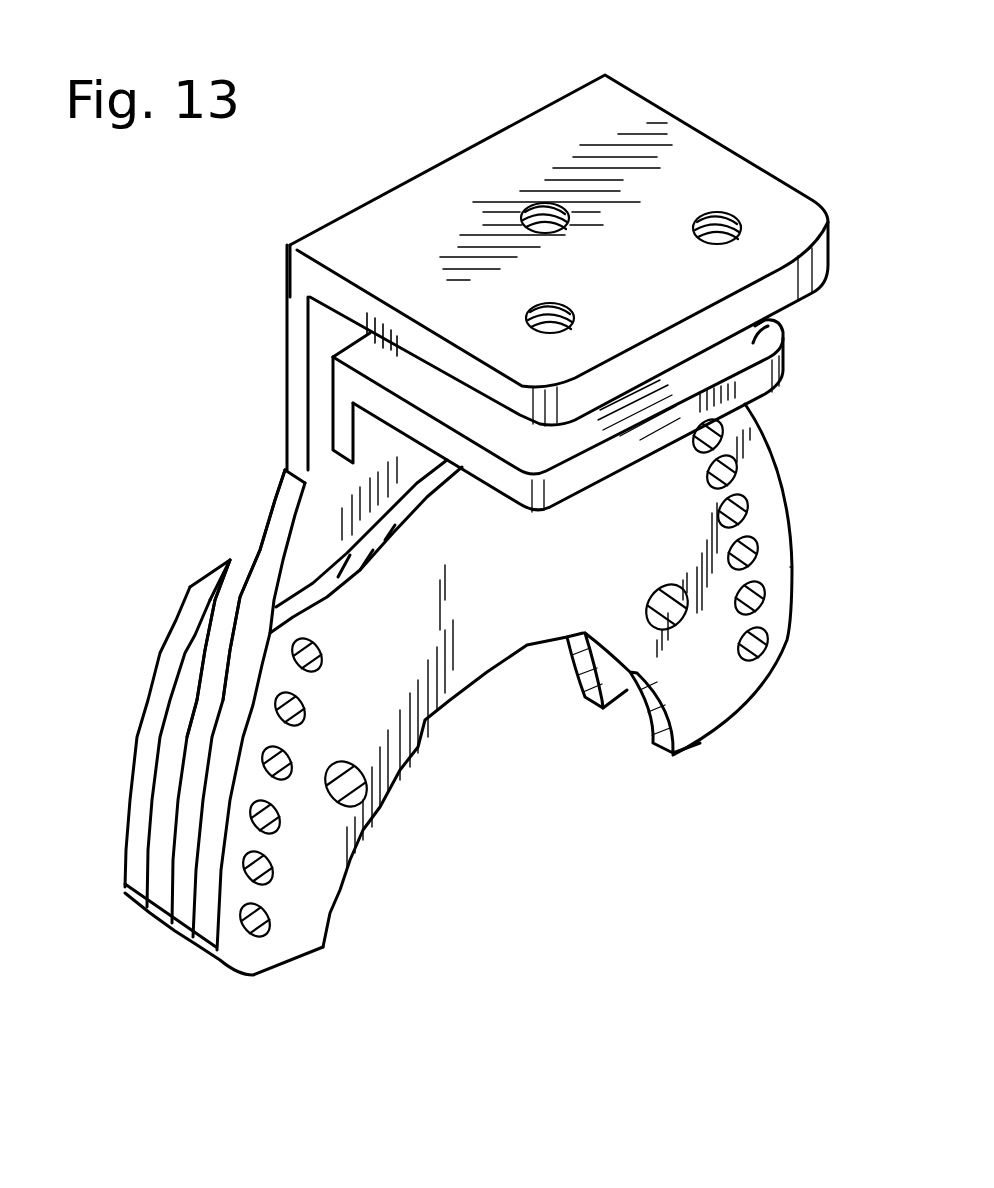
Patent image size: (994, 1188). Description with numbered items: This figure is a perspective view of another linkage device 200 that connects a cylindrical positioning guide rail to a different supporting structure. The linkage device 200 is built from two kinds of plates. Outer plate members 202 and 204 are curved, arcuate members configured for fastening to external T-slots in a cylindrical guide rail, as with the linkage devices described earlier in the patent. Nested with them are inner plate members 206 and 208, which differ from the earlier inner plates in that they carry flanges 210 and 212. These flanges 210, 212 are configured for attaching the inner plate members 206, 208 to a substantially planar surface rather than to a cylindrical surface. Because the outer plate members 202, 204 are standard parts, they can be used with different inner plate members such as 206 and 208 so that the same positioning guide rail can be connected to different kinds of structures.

The linkage device 200 is at (152, 245).
The outer plate member 202 is at (135, 862).
The outer plate member 204 is at (300, 905).
The inner plate member 206 is at (279, 495).
The inner plate member 208 is at (278, 552).
The flange 210 is at (773, 195).
The flange 212 is at (755, 337).